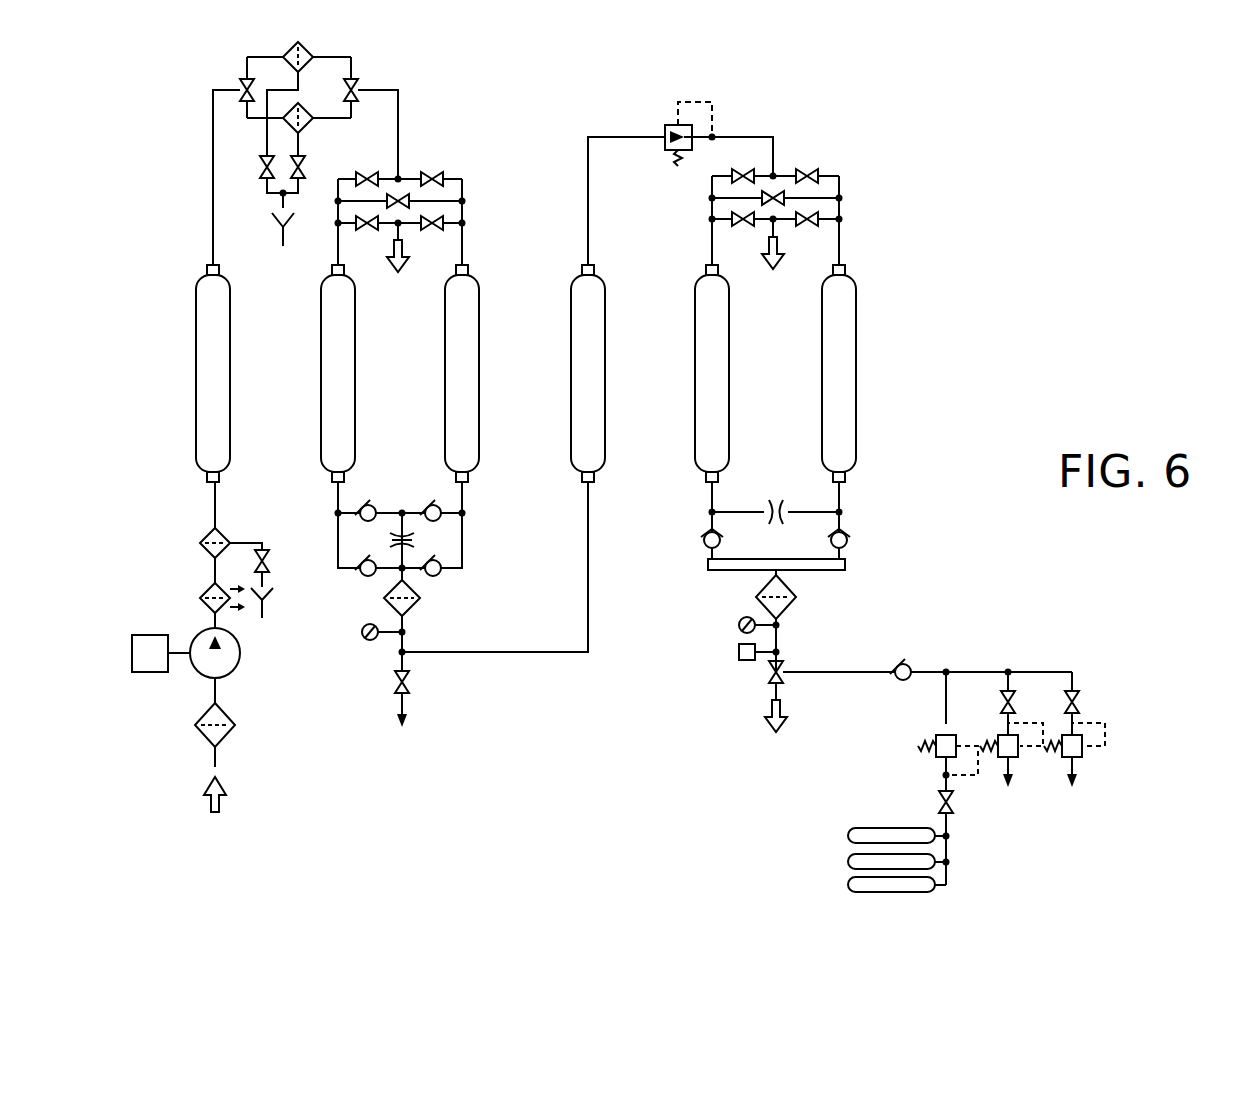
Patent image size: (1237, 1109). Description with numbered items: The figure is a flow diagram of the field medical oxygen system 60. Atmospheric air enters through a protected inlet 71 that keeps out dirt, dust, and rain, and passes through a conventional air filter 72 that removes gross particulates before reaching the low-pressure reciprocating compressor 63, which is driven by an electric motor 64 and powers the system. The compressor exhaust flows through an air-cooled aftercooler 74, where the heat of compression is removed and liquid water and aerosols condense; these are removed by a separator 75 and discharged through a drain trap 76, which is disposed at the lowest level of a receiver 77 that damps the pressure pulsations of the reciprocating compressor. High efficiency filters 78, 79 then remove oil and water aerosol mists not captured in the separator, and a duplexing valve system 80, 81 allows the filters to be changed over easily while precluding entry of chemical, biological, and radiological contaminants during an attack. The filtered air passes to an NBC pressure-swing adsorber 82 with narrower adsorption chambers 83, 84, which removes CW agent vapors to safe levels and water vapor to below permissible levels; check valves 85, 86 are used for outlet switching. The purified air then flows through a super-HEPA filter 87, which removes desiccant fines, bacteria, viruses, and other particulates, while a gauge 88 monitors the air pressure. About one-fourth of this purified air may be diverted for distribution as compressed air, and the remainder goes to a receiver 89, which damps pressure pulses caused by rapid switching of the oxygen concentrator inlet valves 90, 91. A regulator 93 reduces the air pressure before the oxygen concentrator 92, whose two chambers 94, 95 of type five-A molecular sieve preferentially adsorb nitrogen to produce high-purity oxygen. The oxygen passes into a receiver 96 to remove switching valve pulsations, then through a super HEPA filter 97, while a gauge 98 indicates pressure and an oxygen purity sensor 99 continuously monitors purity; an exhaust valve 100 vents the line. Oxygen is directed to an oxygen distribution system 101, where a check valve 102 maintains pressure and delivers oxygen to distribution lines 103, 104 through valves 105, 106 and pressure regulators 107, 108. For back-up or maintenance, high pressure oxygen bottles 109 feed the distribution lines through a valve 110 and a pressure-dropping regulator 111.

The field medical oxygen system 60 is at (958, 232).
The reciprocating compressor 63 is at (240, 670).
The electric motor 64 is at (132, 653).
The protected inlet 71 is at (228, 756).
The air filter 72 is at (235, 722).
The air-cooled aftercooler 74 is at (205, 593).
The separator 75 is at (204, 541).
The drain trap 76 is at (289, 557).
The receiver 77 is at (231, 348).
The high efficiency filter 78 is at (315, 56).
The high efficiency filter 79 is at (312, 124).
The duplexing valve 80 is at (240, 86).
The duplexing valve 81 is at (359, 86).
The NBC pressure-swing adsorber 82 is at (399, 327).
The adsorption chamber 83 is at (321, 427).
The adsorption chamber 84 is at (480, 432).
The check valve 85 is at (360, 578).
The check valve 86 is at (445, 575).
The super-HEPA filter 87 is at (384, 600).
The gauge 88 is at (365, 640).
The receiver 89 is at (604, 410).
The oxygen concentrator inlet valve 90 is at (743, 168).
The oxygen concentrator inlet valve 91 is at (812, 168).
The oxygen concentrator 92 is at (785, 317).
The regulator 93 is at (688, 88).
The oxygen concentrator chamber 94 is at (696, 444).
The oxygen concentrator chamber 95 is at (857, 429).
The receiver 96 is at (842, 574).
The super HEPA filter 97 is at (797, 606).
The gauge 98 is at (740, 622).
The oxygen purity sensor 99 is at (739, 652).
The exhaust valve 100 is at (768, 680).
The oxygen distribution system 101 is at (1100, 655).
The check valve 102 is at (897, 679).
The distribution line 103 is at (1003, 772).
The distribution line 104 is at (1078, 768).
The valve 105 is at (1002, 698).
The valve 106 is at (1080, 706).
The pressure regulator 107 is at (1020, 765).
The pressure regulator 108 is at (1084, 754).
The high pressure oxygen bottles 109 is at (858, 822).
The valve 110 is at (939, 802).
The pressure-dropping regulator 111 is at (938, 738).